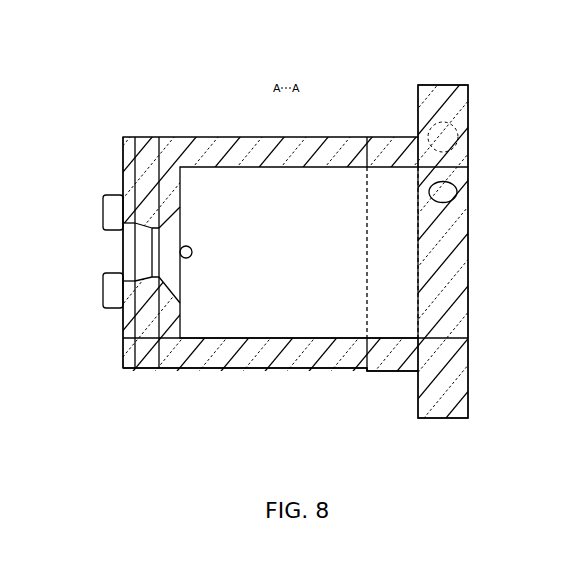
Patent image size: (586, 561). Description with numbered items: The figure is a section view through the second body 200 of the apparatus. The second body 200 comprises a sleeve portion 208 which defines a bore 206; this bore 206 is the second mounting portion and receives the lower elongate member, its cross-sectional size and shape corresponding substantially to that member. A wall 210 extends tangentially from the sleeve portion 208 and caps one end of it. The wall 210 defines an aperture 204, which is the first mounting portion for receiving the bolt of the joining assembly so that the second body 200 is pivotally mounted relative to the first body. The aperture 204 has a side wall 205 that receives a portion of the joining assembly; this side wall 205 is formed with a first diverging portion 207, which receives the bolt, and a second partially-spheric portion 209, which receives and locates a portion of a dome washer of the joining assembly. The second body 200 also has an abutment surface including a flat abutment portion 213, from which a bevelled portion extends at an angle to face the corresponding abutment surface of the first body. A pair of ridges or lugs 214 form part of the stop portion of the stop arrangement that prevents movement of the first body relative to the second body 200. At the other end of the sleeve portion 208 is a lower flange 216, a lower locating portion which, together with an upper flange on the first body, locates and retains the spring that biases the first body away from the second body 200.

The second body 200 is at (118, 85).
The aperture 204 is at (122, 247).
The side wall 205 is at (152, 282).
The bore 206 is at (265, 182).
The first diverging portion 207 is at (137, 220).
The sleeve portion 208 is at (310, 357).
The second partially-spheric portion 209 is at (173, 277).
The wall 210 is at (135, 195).
The flat abutment portion 213 is at (123, 165).
The ridges or lugs 214 is at (108, 300).
The lower flange 216 is at (466, 94).